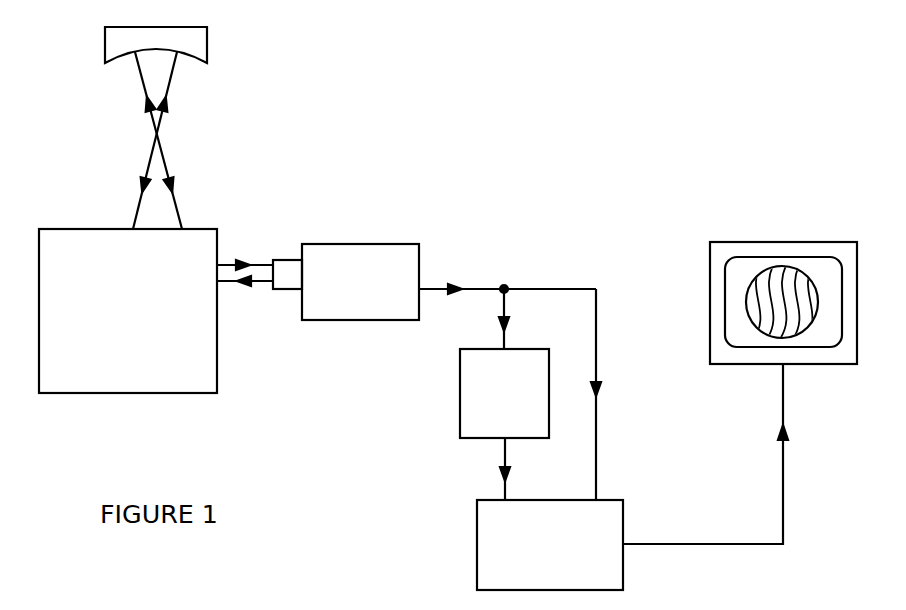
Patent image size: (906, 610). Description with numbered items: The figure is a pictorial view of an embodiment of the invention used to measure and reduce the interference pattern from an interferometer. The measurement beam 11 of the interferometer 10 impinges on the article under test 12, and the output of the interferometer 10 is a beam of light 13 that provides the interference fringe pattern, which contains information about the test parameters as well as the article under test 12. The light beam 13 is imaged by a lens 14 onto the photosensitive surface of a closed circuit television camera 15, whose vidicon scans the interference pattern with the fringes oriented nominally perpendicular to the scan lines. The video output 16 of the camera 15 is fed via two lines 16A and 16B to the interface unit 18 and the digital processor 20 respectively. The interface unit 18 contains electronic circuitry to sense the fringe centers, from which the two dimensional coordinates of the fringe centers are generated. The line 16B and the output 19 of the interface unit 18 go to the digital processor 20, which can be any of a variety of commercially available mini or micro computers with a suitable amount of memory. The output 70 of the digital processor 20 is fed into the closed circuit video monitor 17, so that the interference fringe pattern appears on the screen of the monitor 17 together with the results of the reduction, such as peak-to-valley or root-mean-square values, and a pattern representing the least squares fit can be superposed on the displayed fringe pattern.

The interferometer 10 is at (76, 229).
The measurement beam 11 is at (170, 166).
The article under test 12 is at (208, 36).
The beam of light 13 is at (232, 283).
The lens 14 is at (284, 260).
The closed circuit television camera 15 is at (328, 244).
The video output 16 is at (440, 287).
The line 16A is at (506, 333).
The line 16B is at (597, 364).
The closed circuit video monitor 17 is at (778, 242).
The interface unit 18 is at (460, 396).
The output of the interface unit 19 is at (504, 456).
The digital processor 20 is at (477, 546).
The output of the digital processor 70 is at (695, 550).